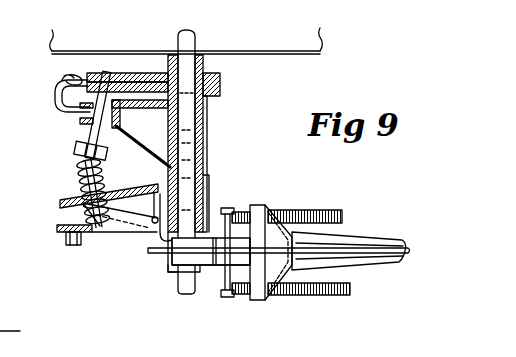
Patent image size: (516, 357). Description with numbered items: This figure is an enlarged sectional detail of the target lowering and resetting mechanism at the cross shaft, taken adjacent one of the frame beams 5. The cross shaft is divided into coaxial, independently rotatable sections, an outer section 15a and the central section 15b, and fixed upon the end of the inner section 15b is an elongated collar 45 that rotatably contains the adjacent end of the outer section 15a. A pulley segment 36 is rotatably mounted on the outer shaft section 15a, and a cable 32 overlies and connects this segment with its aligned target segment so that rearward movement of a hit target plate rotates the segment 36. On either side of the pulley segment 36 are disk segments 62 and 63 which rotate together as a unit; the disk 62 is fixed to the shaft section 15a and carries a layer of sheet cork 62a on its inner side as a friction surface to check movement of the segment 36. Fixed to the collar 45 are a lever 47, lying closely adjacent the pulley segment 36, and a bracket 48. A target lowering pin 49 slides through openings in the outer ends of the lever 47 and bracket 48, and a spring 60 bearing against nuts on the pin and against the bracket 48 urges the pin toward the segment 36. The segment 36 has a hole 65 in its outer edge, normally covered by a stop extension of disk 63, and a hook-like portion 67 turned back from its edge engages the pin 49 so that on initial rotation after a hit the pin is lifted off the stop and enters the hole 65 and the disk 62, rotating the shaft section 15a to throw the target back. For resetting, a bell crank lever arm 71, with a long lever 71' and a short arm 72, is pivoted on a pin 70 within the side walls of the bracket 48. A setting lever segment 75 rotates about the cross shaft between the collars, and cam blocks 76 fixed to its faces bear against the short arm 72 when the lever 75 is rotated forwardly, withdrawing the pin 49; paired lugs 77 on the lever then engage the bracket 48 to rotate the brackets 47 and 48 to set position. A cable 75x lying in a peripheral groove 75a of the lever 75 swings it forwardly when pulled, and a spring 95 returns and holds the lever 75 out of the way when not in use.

The beam 5 is at (282, 54).
The outer shaft section 15a is at (190, 42).
The central shaft section 15b is at (201, 161).
The cable 32 is at (58, 90).
The pulley segment 36 is at (62, 76).
The elongated collar 45 is at (209, 178).
The lever or bracket 47 is at (162, 132).
The bracket or arm 48 is at (75, 205).
The target lowering pin 49 is at (93, 140).
The spring 60 is at (73, 179).
The disk segment 62 is at (132, 86).
The sheet cork layer 62a is at (217, 79).
The disk segment 63 is at (146, 98).
The hole 65 is at (108, 74).
The hook-like portion 67 is at (78, 119).
The pivot pin 70 is at (156, 214).
The bell crank lever arm 71 is at (84, 251).
The long lever 71' is at (87, 234).
The short arm 72 is at (158, 239).
The setting lever arm or segment 75 is at (170, 252).
The peripheral groove or trough 75a is at (404, 245).
The cable 75x is at (410, 252).
The cam block 76 is at (214, 246).
The bracket or lug 77 is at (264, 208).
The return spring 95 is at (344, 218).